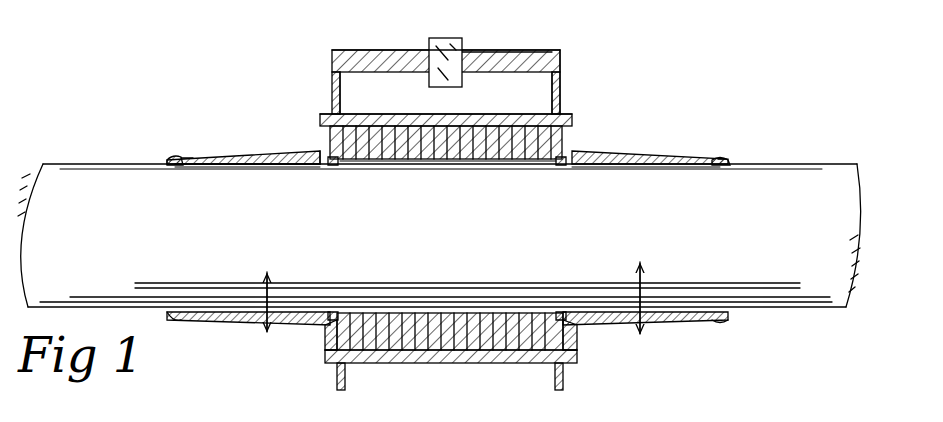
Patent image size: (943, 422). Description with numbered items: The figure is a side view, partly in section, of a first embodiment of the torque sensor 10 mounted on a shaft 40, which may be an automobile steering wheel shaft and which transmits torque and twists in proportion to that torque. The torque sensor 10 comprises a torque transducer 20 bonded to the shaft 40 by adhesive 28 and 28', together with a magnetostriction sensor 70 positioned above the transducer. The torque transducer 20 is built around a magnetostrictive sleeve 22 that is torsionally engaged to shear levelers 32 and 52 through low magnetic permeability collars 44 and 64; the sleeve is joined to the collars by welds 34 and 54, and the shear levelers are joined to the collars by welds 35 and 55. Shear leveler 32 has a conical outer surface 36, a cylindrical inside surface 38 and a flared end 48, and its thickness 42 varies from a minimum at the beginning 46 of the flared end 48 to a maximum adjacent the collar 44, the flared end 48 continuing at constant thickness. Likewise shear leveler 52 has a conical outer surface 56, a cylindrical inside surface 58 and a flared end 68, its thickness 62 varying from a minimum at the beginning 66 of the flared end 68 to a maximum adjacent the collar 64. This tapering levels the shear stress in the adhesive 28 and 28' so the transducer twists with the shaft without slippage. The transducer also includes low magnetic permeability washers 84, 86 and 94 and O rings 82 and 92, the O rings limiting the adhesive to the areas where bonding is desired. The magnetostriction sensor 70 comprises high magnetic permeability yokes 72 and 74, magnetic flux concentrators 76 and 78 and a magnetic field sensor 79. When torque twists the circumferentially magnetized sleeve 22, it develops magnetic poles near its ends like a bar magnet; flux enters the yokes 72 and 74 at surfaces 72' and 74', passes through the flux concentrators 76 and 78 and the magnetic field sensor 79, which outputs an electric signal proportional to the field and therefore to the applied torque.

The torque sensor 10 is at (305, 95).
The torque transducer 20 is at (625, 100).
The magnetostrictive sleeve 22 is at (530, 115).
The adhesive 28 is at (128, 139).
The adhesive 28' is at (776, 132).
The shear leveler 32 is at (300, 168).
The weld 34 is at (318, 130).
The weld 35 is at (330, 322).
The conical outer surface 36 is at (277, 155).
The cylindrical inside surface 38 is at (222, 170).
The shaft 40 is at (813, 233).
The thickness 42 is at (267, 335).
The low magnetic permeability collar 44 is at (322, 340).
The beginning of flared end 46 is at (200, 162).
The flared end 48 is at (185, 321).
The shear leveler 52 is at (600, 167).
The weld 54 is at (572, 118).
The weld 55 is at (605, 330).
The conical outer surface 56 is at (650, 155).
The cylindrical inside surface 58 is at (672, 168).
The thickness 62 is at (640, 337).
The low magnetic permeability collar 64 is at (580, 340).
The beginning of flared end 66 is at (695, 155).
The flared end 68 is at (710, 322).
The magnetostriction sensor 70 is at (565, 50).
The high magnetic permeability yoke 72 is at (375, 93).
The yoke surface 72' is at (368, 382).
The high magnetic permeability yoke 74 is at (516, 91).
The yoke surface 74' is at (531, 382).
The magnetic flux concentrator 76 is at (375, 52).
The magnetic flux concentrator 78 is at (500, 52).
The magnetic field sensor 79 is at (445, 38).
The O ring 82 is at (338, 318).
The low magnetic permeability washer 84 is at (340, 165).
The low magnetic permeability washer 86 is at (400, 316).
The O ring 92 is at (556, 163).
The low magnetic permeability washer 94 is at (560, 318).